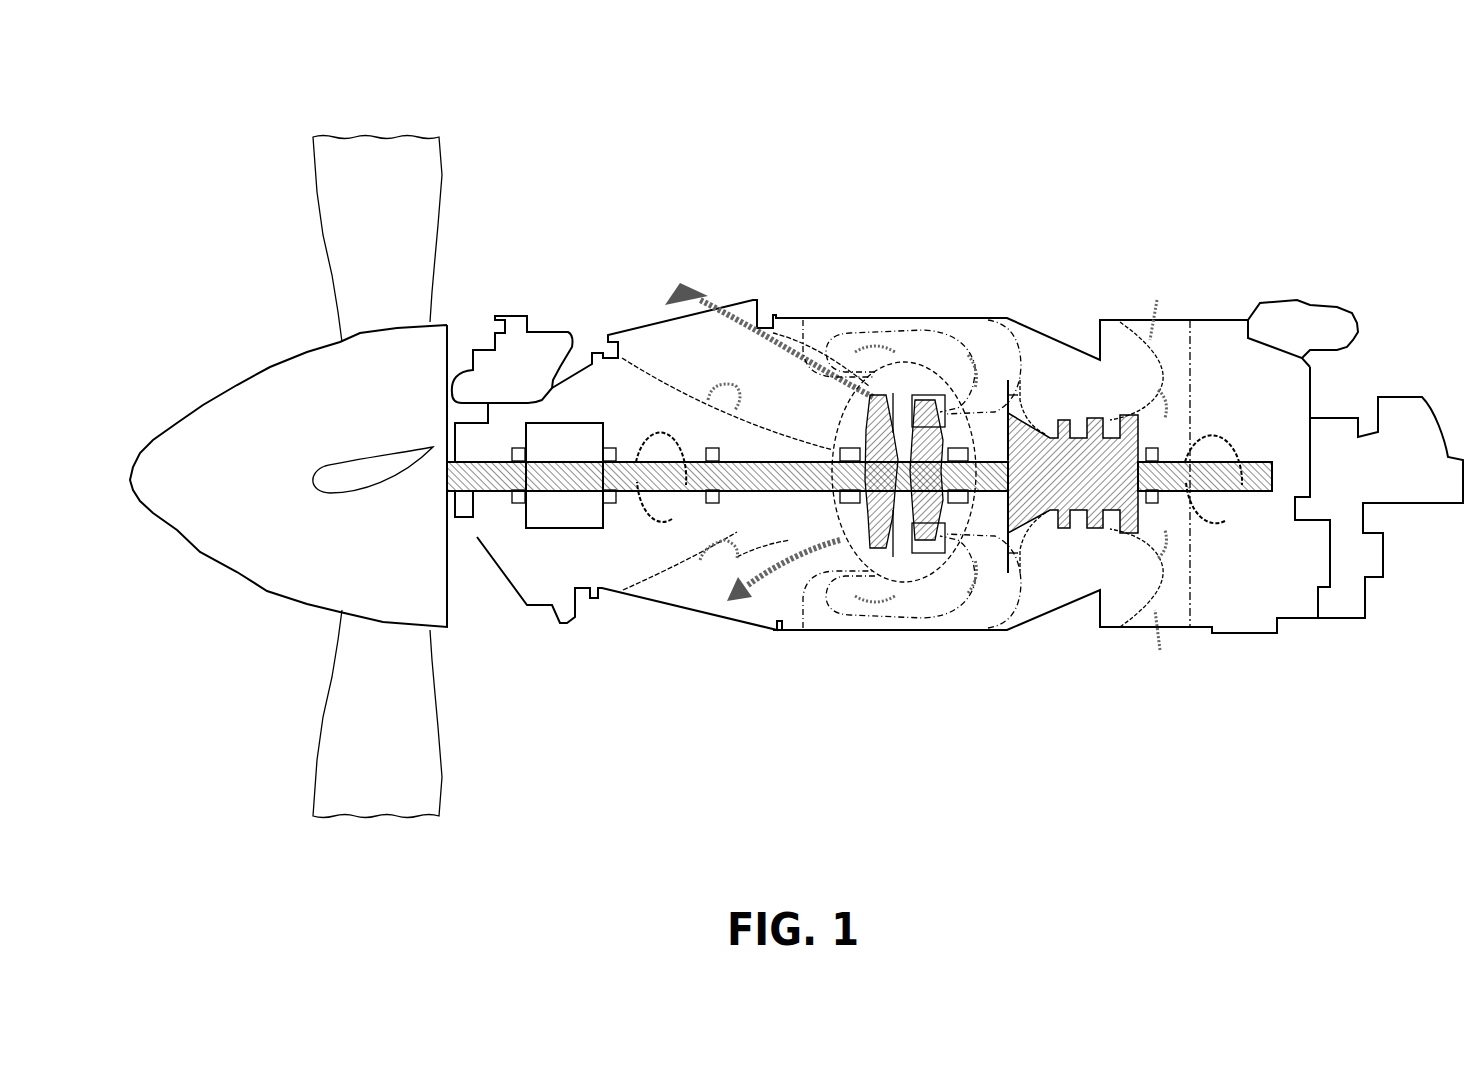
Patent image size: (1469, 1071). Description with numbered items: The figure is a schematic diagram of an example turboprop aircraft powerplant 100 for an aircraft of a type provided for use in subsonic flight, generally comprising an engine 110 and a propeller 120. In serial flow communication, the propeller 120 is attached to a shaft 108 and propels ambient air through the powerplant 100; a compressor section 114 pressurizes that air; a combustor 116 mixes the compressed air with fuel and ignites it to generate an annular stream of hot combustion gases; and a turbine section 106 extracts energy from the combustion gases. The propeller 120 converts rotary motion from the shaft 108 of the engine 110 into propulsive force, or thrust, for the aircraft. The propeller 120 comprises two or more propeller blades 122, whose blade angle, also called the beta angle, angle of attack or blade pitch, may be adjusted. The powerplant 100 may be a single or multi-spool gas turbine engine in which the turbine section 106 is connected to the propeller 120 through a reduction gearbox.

The aircraft powerplant 100 is at (1098, 72).
The turbine section 106 is at (833, 505).
The shaft 108 is at (474, 484).
The engine 110 is at (457, 278).
The compressor section 114 is at (1056, 548).
The combustor 116 is at (933, 355).
The propeller 120 is at (100, 120).
The propeller blades 122 is at (415, 190).